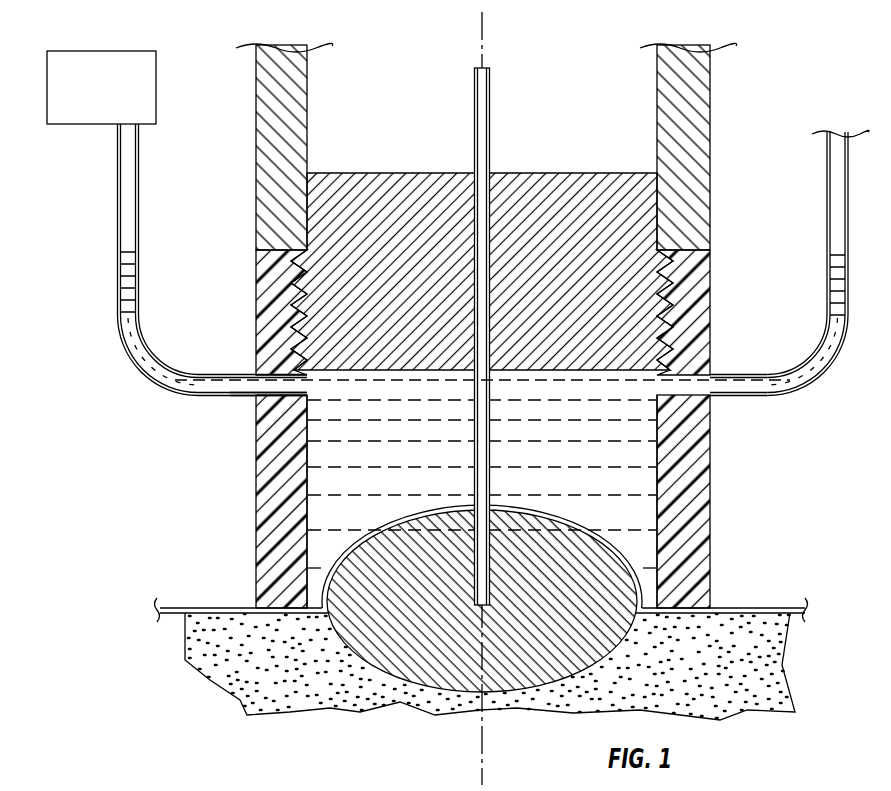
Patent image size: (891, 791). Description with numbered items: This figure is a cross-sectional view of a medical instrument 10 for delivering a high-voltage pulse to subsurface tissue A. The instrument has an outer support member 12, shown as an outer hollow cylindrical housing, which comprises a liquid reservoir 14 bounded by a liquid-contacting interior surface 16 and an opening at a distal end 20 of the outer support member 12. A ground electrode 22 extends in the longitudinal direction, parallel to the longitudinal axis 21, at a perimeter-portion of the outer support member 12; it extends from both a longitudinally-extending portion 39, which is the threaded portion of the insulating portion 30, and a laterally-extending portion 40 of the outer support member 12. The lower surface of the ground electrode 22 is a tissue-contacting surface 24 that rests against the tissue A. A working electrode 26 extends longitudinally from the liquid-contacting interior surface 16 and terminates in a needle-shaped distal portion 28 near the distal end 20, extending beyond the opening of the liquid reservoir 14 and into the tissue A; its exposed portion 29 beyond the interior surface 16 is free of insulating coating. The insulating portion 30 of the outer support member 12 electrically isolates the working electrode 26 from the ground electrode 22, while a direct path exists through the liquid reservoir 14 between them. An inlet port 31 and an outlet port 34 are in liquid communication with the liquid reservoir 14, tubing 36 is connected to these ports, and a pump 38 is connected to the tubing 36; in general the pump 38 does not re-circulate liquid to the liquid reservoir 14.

The medical instrument 10 is at (171, 33).
The pump 38 is at (87, 102).
The tubing 36 is at (118, 258).
The laterally-extending portion 40 is at (287, 249).
The longitudinally-extending portion 39 is at (298, 264).
The working electrode 26 is at (492, 120).
The insulating portion 30 is at (573, 188).
The outer support member 12 is at (712, 250).
The liquid-contacting interior surface 16 is at (337, 362).
The outlet port 34 is at (712, 378).
The inlet port 31 is at (252, 399).
The ground electrode 22 is at (308, 469).
The liquid reservoir 14 is at (333, 541).
The exposed portion 29 is at (664, 488).
The distal end 20 is at (716, 600).
The needle-shaped distal portion 28 is at (496, 598).
The tissue-contacting surface 24 is at (692, 618).
The tissue A is at (566, 656).
The longitudinal axis 21 is at (487, 742).